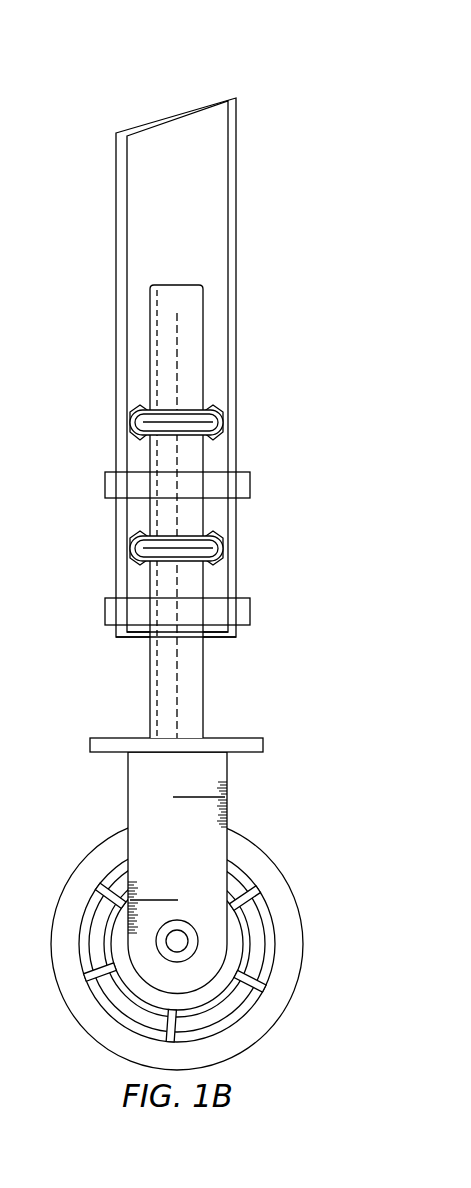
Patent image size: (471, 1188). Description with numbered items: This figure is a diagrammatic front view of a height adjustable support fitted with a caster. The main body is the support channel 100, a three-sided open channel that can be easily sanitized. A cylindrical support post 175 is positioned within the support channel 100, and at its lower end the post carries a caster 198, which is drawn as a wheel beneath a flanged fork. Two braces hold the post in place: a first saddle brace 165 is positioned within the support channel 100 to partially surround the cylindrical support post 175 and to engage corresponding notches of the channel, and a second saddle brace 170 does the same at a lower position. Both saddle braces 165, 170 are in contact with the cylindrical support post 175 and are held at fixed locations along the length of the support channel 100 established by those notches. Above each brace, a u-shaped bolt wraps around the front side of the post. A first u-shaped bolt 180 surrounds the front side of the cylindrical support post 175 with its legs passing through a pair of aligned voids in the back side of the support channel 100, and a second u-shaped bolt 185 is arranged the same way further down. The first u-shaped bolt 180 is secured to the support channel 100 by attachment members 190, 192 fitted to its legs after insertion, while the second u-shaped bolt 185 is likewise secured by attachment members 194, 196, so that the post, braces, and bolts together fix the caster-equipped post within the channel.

The support channel 100 is at (216, 367).
The cylindrical support post 175 is at (203, 323).
The first u-shaped bolt 180 is at (187, 434).
The second u-shaped bolt 185 is at (187, 561).
The attachment member 190 is at (133, 412).
The attachment member 192 is at (222, 412).
The attachment member 194 is at (133, 535).
The attachment member 196 is at (222, 535).
The first saddle brace 165 is at (107, 472).
The second saddle brace 170 is at (107, 598).
The caster 198 is at (128, 780).